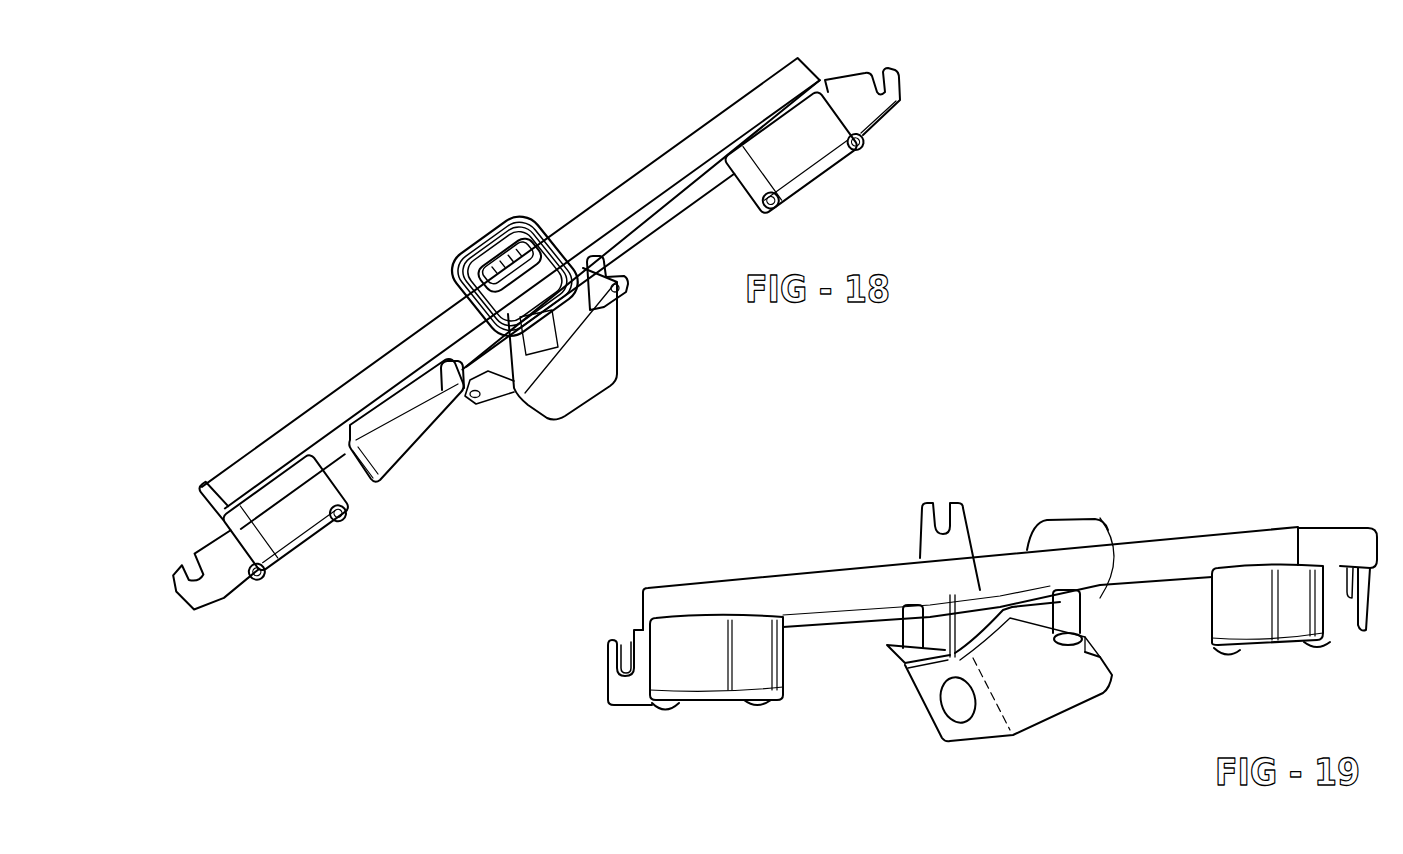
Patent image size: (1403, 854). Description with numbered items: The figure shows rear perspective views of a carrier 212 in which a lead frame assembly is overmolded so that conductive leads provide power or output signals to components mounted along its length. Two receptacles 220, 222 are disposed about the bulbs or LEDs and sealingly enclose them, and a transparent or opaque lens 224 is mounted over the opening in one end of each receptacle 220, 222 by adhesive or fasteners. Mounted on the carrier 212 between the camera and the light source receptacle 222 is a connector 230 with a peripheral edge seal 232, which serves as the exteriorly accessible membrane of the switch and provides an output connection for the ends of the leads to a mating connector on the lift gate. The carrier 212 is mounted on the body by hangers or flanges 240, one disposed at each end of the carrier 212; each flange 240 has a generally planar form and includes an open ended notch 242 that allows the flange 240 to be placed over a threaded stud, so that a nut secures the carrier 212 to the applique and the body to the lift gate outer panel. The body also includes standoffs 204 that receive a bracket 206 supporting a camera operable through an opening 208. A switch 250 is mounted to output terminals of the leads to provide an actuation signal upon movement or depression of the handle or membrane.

In FIG. 18, the standoffs 204 is at (455, 332).
In FIG. 19, the standoffs 204 is at (1073, 605).
In FIG. 18, the bracket 206 is at (580, 380).
In FIG. 19, the bracket 206 is at (1060, 708).
In FIG. 19, the opening 208 is at (957, 698).
In FIG. 18, the carrier 212 is at (622, 202).
In FIG. 19, the carrier 212 is at (793, 568).
In FIG. 18, the receptacle 220 is at (788, 160).
In FIG. 18, the receptacle 222 is at (280, 495).
In FIG. 19, the receptacle 222 is at (693, 680).
In FIG. 18, the lens 224 is at (832, 167).
In FIG. 18, the connector 230 is at (516, 254).
In FIG. 18, the peripheral edge seal 232 is at (462, 263).
In FIG. 18, the flange 240 is at (848, 90).
In FIG. 19, the flange 240 is at (622, 652).
In FIG. 19, the notch 242 is at (615, 660).
In FIG. 19, the switch 250 is at (1152, 643).